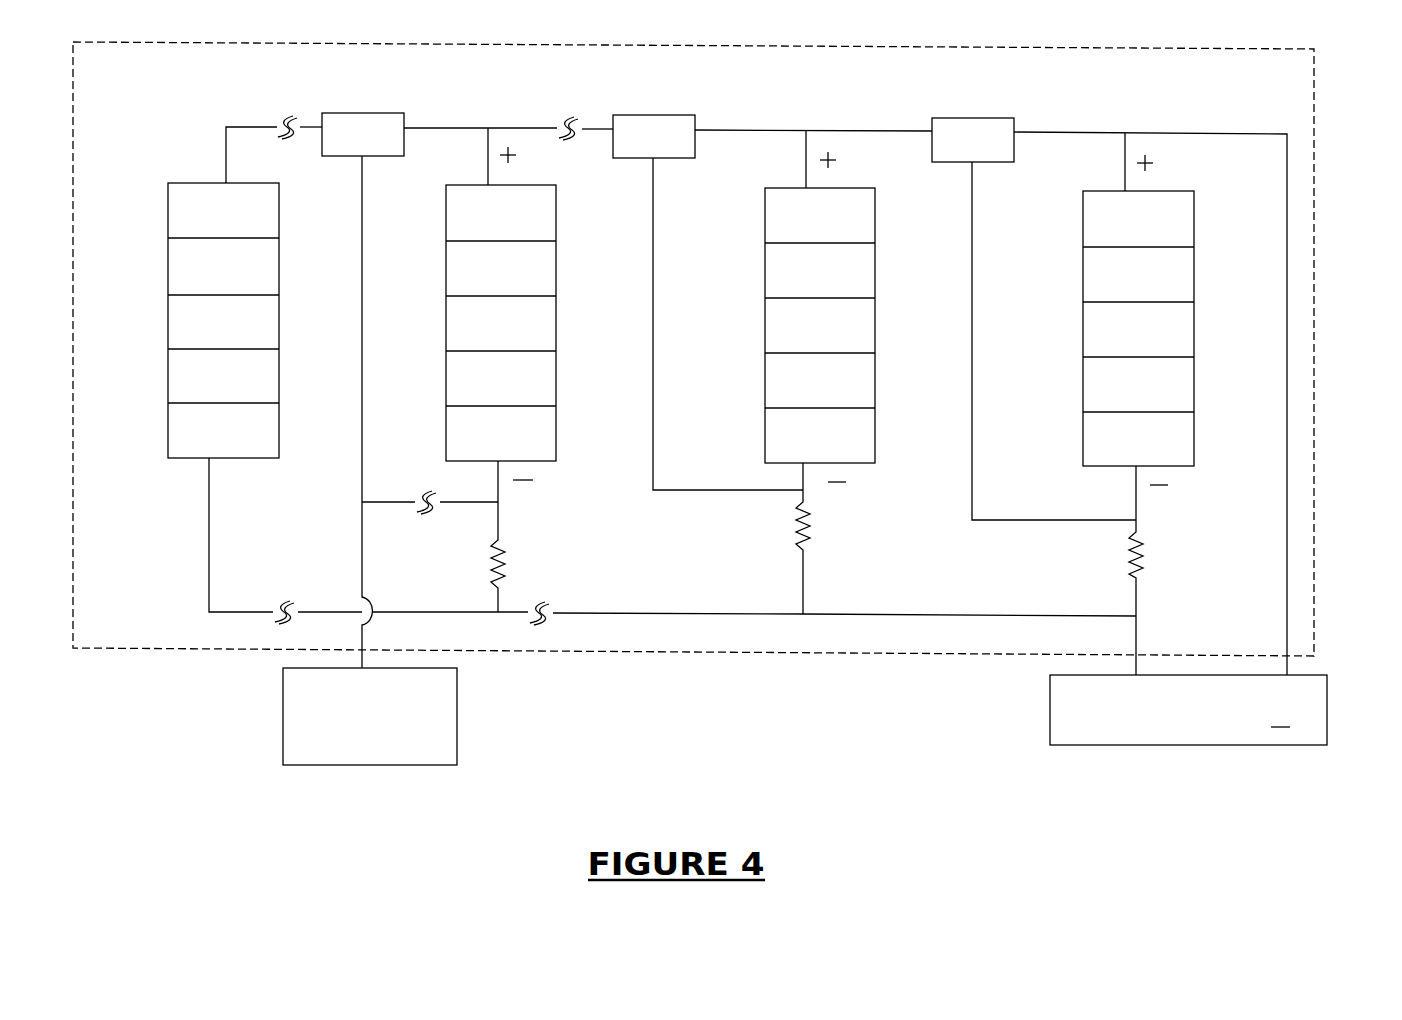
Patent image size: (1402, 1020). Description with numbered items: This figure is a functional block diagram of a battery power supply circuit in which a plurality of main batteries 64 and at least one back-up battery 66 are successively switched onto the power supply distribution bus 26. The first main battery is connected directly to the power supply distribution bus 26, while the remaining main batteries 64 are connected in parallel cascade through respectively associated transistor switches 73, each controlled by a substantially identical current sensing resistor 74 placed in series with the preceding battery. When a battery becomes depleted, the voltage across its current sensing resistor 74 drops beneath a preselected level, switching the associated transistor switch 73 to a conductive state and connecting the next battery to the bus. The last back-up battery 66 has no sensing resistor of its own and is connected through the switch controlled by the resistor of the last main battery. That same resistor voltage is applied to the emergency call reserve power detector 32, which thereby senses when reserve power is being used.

The power supply distribution bus 26 is at (1219, 683).
The emergency call reserve power detector 32 is at (408, 716).
The main battery 64 is at (772, 325).
The back-up battery 66 is at (179, 295).
The transistor switch 73 is at (654, 111).
The current sensing resistor 74 is at (856, 568).